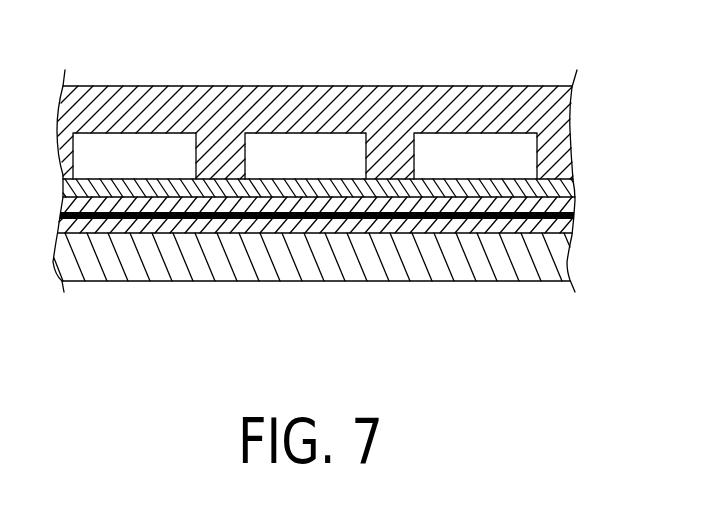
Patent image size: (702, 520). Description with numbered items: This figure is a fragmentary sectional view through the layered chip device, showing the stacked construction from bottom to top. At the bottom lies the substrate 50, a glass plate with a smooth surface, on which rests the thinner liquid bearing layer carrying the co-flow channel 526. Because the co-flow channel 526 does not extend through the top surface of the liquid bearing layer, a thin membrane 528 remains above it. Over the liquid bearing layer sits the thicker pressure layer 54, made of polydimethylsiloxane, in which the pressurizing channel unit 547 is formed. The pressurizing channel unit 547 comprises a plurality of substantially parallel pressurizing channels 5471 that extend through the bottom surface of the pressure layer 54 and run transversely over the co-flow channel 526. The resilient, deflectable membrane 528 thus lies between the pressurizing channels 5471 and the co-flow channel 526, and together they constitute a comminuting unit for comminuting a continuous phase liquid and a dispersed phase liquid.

The substrate 50 is at (483, 262).
The co-flow channel 526 is at (300, 225).
The membrane 528 is at (491, 188).
The pressure layer 54 is at (315, 146).
The pressurizing channel unit 547 is at (213, 83).
The pressurizing channels 5471 is at (435, 152).